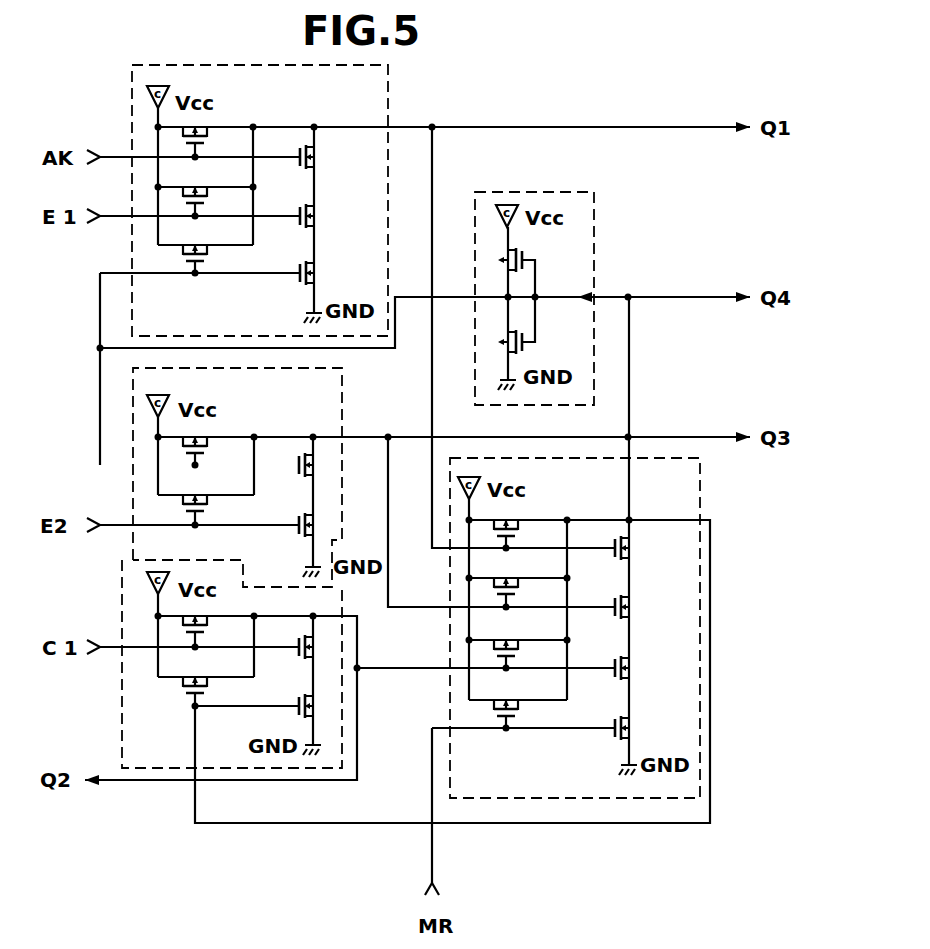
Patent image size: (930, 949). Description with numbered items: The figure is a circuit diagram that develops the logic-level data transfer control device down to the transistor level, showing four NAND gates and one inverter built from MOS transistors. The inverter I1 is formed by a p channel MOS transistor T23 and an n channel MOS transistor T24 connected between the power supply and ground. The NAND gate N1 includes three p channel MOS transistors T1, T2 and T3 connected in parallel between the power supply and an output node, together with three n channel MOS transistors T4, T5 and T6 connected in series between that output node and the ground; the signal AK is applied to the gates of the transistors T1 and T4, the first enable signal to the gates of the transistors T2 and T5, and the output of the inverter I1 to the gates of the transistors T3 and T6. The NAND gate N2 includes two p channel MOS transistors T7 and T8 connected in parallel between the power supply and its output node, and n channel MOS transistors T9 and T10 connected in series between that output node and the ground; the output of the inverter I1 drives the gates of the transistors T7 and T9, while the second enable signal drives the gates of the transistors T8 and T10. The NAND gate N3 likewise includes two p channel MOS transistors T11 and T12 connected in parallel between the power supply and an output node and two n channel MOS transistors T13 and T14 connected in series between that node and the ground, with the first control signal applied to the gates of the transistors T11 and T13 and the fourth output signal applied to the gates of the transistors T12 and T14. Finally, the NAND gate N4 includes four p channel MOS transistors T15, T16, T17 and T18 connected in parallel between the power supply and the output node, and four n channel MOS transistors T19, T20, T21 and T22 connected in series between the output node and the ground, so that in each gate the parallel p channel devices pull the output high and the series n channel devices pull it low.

The NAND gate N1 is at (388, 92).
The NAND gate N2 is at (342, 392).
The NAND gate N3 is at (193, 664).
The NAND gate N4 is at (700, 480).
The inverter I1 is at (594, 225).
The p channel MOS transistor T1 is at (213, 142).
The p channel MOS transistor T2 is at (213, 201).
The p channel MOS transistor T3 is at (213, 259).
The n channel MOS transistor T4 is at (329, 157).
The n channel MOS transistor T5 is at (329, 216).
The n channel MOS transistor T6 is at (329, 274).
The p channel MOS transistor T7 is at (213, 451).
The p channel MOS transistor T8 is at (214, 510).
The n channel MOS transistor T9 is at (291, 480).
The n channel MOS transistor T10 is at (290, 537).
The p channel MOS transistor T11 is at (219, 631).
The p channel MOS transistor T12 is at (219, 691).
The n channel MOS transistor T13 is at (293, 660).
The n channel MOS transistor T14 is at (290, 713).
The p channel MOS transistor T15 is at (530, 534).
The p channel MOS transistor T16 is at (530, 592).
The p channel MOS transistor T17 is at (530, 654).
The p channel MOS transistor T18 is at (530, 714).
The n channel MOS transistor T19 is at (651, 549).
The n channel MOS transistor T20 is at (651, 608).
The n channel MOS transistor T21 is at (649, 670).
The n channel MOS transistor T22 is at (650, 728).
The p channel MOS transistor T23 is at (538, 256).
The n channel MOS transistor T24 is at (541, 341).